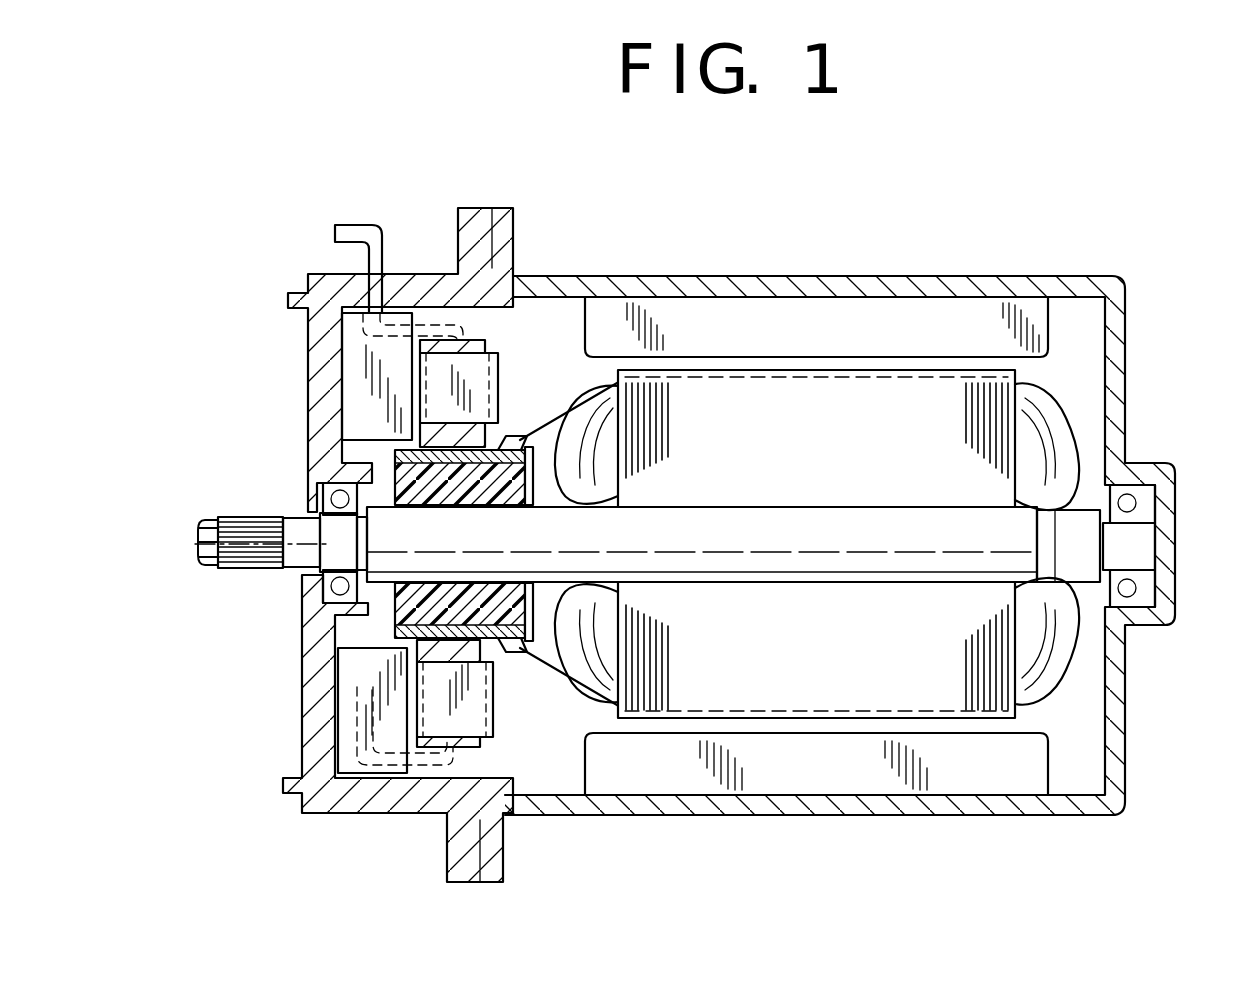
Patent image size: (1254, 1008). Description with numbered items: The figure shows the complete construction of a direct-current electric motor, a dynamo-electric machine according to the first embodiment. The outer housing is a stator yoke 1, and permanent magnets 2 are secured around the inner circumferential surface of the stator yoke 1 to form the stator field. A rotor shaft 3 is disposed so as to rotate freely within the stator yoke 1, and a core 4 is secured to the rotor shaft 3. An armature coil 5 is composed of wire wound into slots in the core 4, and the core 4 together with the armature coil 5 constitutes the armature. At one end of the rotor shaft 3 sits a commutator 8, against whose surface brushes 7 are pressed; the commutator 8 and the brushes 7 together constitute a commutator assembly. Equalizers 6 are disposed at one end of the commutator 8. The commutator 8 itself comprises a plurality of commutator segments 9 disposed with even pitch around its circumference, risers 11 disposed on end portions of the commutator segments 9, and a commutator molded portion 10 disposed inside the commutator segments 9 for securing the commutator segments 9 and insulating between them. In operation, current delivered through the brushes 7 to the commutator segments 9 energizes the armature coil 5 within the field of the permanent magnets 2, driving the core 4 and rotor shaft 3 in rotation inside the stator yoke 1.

The stator yoke 1 is at (633, 286).
The permanent magnets 2 is at (770, 310).
The rotor shaft 3 is at (1082, 565).
The core 4 is at (997, 398).
The armature coil 5 is at (1053, 438).
The equalizers 6 is at (528, 650).
The brushes 7 is at (466, 747).
The commutator 8 is at (373, 625).
The commutator segments 9 is at (392, 470).
The commutator molded portion 10 is at (408, 482).
The risers 11 is at (513, 436).